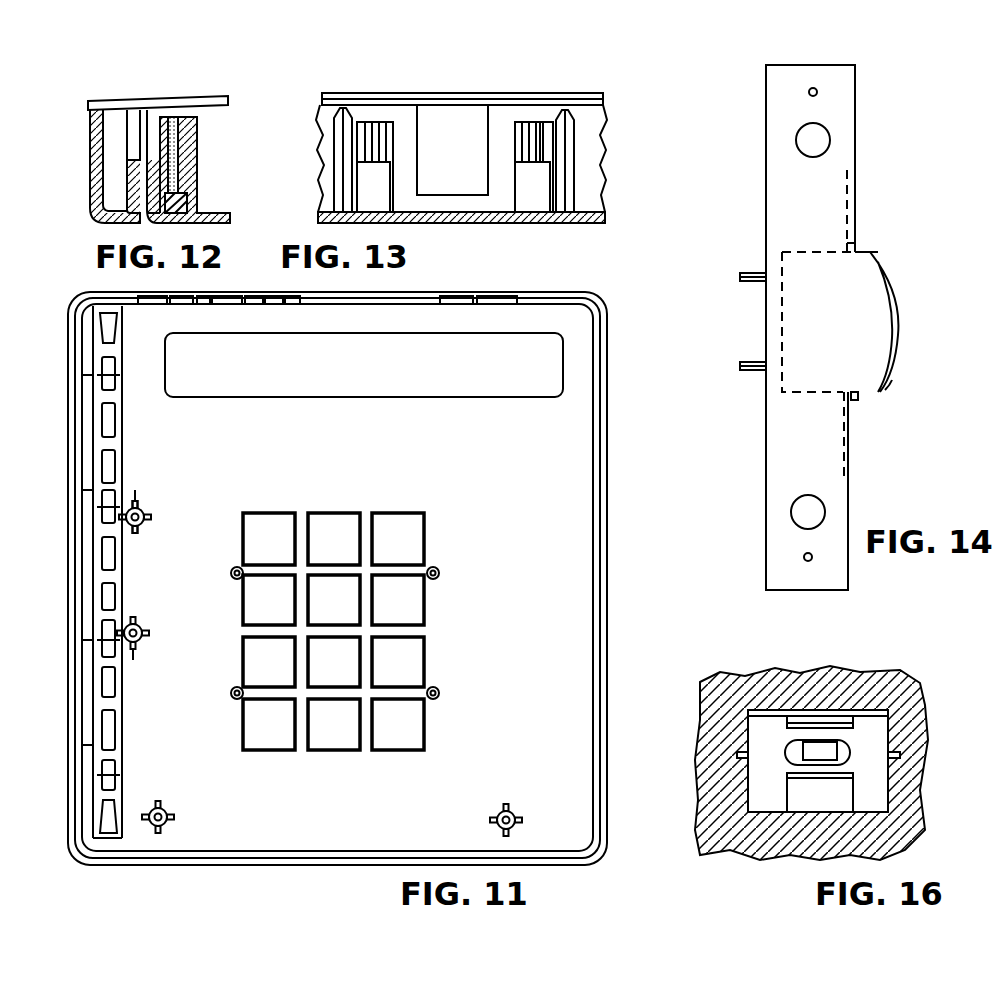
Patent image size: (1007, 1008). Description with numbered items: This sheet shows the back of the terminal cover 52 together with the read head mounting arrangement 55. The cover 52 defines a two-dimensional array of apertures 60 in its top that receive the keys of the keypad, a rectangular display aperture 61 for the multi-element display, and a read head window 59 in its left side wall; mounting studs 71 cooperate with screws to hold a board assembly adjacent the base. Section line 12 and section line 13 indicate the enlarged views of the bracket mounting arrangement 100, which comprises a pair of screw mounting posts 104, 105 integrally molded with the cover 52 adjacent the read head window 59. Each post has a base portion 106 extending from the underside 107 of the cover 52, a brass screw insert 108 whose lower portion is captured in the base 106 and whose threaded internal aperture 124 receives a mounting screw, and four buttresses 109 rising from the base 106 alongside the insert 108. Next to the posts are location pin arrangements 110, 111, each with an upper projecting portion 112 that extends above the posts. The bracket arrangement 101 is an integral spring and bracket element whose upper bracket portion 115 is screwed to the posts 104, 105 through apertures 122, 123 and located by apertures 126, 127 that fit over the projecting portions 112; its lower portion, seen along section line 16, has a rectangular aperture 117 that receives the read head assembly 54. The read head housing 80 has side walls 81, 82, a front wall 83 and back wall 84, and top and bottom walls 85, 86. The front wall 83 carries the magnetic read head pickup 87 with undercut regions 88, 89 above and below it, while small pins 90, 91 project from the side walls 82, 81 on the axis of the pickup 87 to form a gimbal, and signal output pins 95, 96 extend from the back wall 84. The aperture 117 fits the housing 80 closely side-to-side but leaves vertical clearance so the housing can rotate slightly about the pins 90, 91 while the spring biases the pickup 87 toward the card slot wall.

In FIG. 11, the section line 12— 12 is at (175, 620).
In FIG. 11, the section line 13— 13 is at (136, 455).
In FIG. 14, the section line 16— 16 is at (920, 192).
In FIG. 11, the cover 52 is at (590, 580).
In FIG. 14, the read head assembly 54 is at (898, 290).
In FIG. 14, the mounting arrangement 55 is at (760, 452).
In FIG. 11, the read head window 59 is at (118, 563).
In FIG. 11, the apertures 60 is at (418, 548).
In FIG. 11, the display aperture 61 is at (500, 338).
In FIG. 11, the mounting studs 71 is at (515, 810).
In FIG. 14, the housing 80 is at (862, 396).
In FIG. 14, the side wall 81 is at (876, 254).
In FIG. 14, the side wall 82 is at (860, 398).
In FIG. 14, the front wall 83 is at (887, 382).
In FIG. 16, the front wall 83 is at (886, 730).
In FIG. 14, the back wall 84 is at (780, 318).
In FIG. 16, the top wall 85 is at (775, 712).
In FIG. 16, the bottom wall 86 is at (770, 812).
In FIG. 16, the magnetic read head pickup 87 is at (814, 748).
In FIG. 16, the undercut region 88 is at (845, 716).
In FIG. 16, the undercut region 89 is at (840, 790).
In FIG. 16, the pin 90 is at (890, 770).
In FIG. 16, the pin 91 is at (737, 755).
In FIG. 14, the signal output pin 95 is at (742, 370).
In FIG. 14, the signal output pin 96 is at (740, 276).
In FIG. 11, the bracket mounting arrangement 100 is at (152, 519).
In FIG. 14, the bracket arrangement 101 is at (860, 175).
In FIG. 13, the screw mounting post 104 is at (392, 198).
In FIG. 11, the screw mounting post 104 is at (146, 522).
In FIG. 13, the screw mounting post 105 is at (511, 190).
In FIG. 11, the screw mounting post 105 is at (140, 625).
In FIG. 12, the base portion 106 is at (197, 176).
In FIG. 13, the base portion 106 is at (530, 205).
In FIG. 13, the underside 107 is at (590, 212).
In FIG. 12, the brass screw insert 108 is at (188, 205).
In FIG. 13, the brass screw insert 108 is at (540, 125).
In FIG. 11, the brass screw insert 108 is at (144, 510).
In FIG. 12, the buttresses 109 is at (200, 141).
In FIG. 13, the buttresses 109 is at (520, 122).
In FIG. 13, the location pin arrangement 110 is at (568, 155).
In FIG. 11, the location pin arrangement 110 is at (135, 495).
In FIG. 13, the location pin arrangement 111 is at (340, 122).
In FIG. 11, the location pin arrangement 111 is at (134, 652).
In FIG. 13, the upper projecting portion 112 is at (600, 118).
In FIG. 14, the upper bracket portion 115 is at (766, 224).
In FIG. 16, the rectangular aperture 117 is at (752, 712).
In FIG. 14, the aperture 122 is at (826, 140).
In FIG. 14, the aperture 123 is at (820, 512).
In FIG. 12, the threaded internal aperture 124 is at (175, 118).
In FIG. 14, the aperture 126 is at (818, 92).
In FIG. 14, the aperture 127 is at (813, 557).